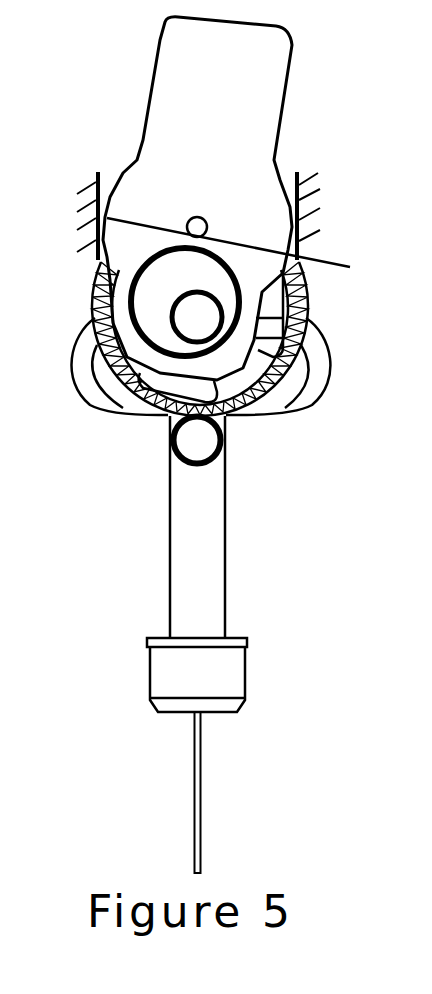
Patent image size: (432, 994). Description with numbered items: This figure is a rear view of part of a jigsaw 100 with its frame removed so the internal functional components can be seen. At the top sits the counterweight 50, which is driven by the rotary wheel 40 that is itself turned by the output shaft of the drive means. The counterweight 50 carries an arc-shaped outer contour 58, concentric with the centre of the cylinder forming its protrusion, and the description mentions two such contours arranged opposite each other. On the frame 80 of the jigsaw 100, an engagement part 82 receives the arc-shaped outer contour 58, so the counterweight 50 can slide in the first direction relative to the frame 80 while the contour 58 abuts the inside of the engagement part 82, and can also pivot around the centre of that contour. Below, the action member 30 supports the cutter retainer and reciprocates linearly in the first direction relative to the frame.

The jigsaw 100 is at (138, 110).
The counterweight 50 is at (237, 127).
The engagement part 82 is at (93, 185).
The frame 80 is at (313, 213).
The arc-shaped outer contour 58 is at (298, 228).
The rotary wheel 40 is at (227, 380).
The action member 30 is at (192, 585).